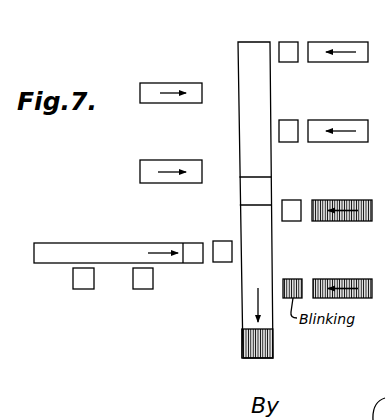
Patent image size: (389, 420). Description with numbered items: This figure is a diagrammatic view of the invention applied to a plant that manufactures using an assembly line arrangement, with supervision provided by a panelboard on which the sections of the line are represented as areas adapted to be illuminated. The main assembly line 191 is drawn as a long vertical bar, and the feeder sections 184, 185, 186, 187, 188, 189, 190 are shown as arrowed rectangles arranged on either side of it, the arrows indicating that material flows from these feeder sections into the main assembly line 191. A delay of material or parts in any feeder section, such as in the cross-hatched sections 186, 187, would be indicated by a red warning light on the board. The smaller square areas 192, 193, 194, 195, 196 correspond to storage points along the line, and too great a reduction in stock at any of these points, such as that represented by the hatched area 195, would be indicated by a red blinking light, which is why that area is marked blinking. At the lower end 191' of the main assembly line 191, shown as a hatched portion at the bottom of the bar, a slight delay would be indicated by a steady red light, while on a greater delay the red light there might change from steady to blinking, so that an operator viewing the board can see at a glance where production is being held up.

The feeder section area 184 is at (352, 42).
The feeder section area 185 is at (350, 120).
The feeder section area 186 is at (343, 200).
The feeder section area 187 is at (350, 279).
The feeder section area 188 is at (170, 83).
The feeder section area 189 is at (169, 160).
The feeder section area 190 is at (150, 243).
The main assembly line 191 is at (237, 200).
The lower end of main assembly line 191' is at (240, 343).
The storage point area 192 is at (290, 42).
The storage point area 193 is at (291, 120).
The storage point area 194 is at (294, 200).
The storage point area 195 is at (294, 279).
The storage point area 196 is at (225, 241).